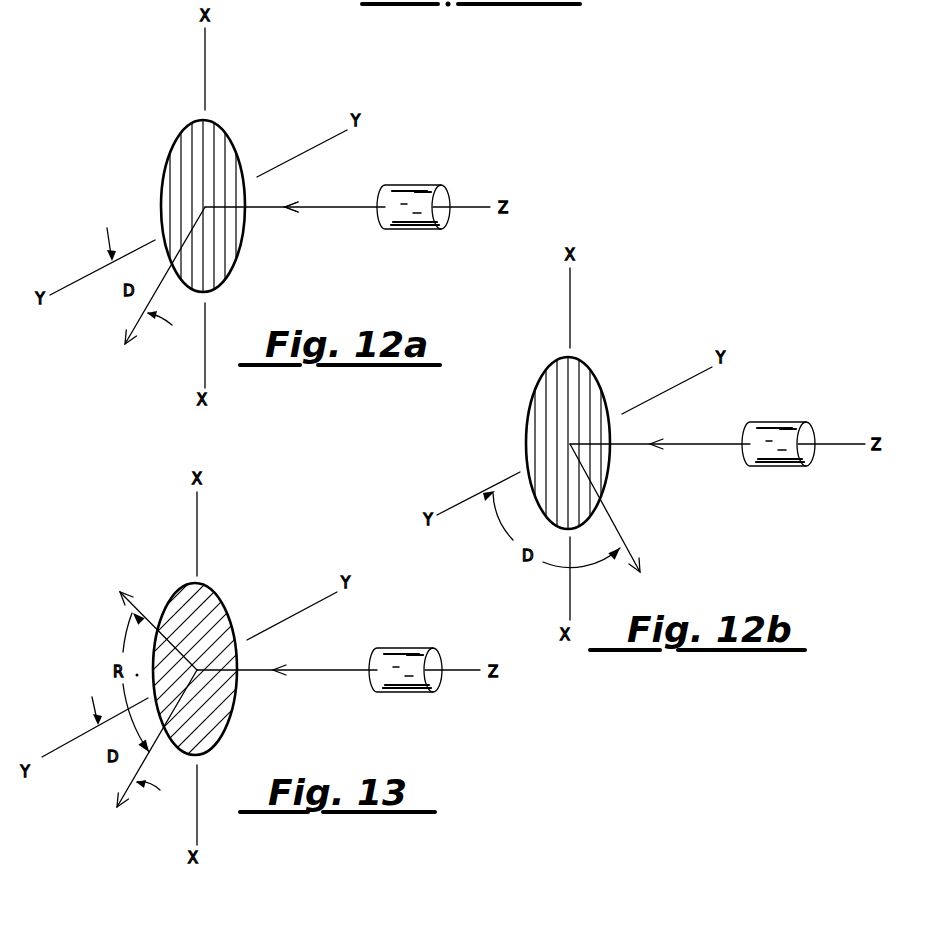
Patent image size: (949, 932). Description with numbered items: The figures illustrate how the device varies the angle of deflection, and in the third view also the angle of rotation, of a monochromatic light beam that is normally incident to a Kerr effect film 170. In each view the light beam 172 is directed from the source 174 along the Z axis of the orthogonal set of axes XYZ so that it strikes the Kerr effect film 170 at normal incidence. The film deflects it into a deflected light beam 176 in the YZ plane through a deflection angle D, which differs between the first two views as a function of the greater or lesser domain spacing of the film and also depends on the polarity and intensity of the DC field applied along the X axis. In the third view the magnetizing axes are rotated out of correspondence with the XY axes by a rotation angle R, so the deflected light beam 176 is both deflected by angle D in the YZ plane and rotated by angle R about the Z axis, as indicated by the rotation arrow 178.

In FIG. 12A, the Kerr effect film 170 is at (174, 207).
In FIG. 12B, the Kerr effect film 170 is at (582, 437).
In FIG. 13, the Kerr effect film 170 is at (194, 663).
In FIG. 12A, the light beam 172 is at (313, 231).
In FIG. 12B, the light beam 172 is at (682, 467).
In FIG. 13, the light beam 172 is at (306, 691).
In FIG. 12A, the source 174 is at (423, 191).
In FIG. 12B, the source 174 is at (788, 428).
In FIG. 13, the source 174 is at (413, 654).
In FIG. 12A, the deflected light beam 176 is at (128, 275).
In FIG. 12B, the deflected light beam 176 is at (634, 508).
In FIG. 13, the deflected light beam 176 is at (122, 739).
In FIG. 13, the direction of rotation 178 is at (156, 610).